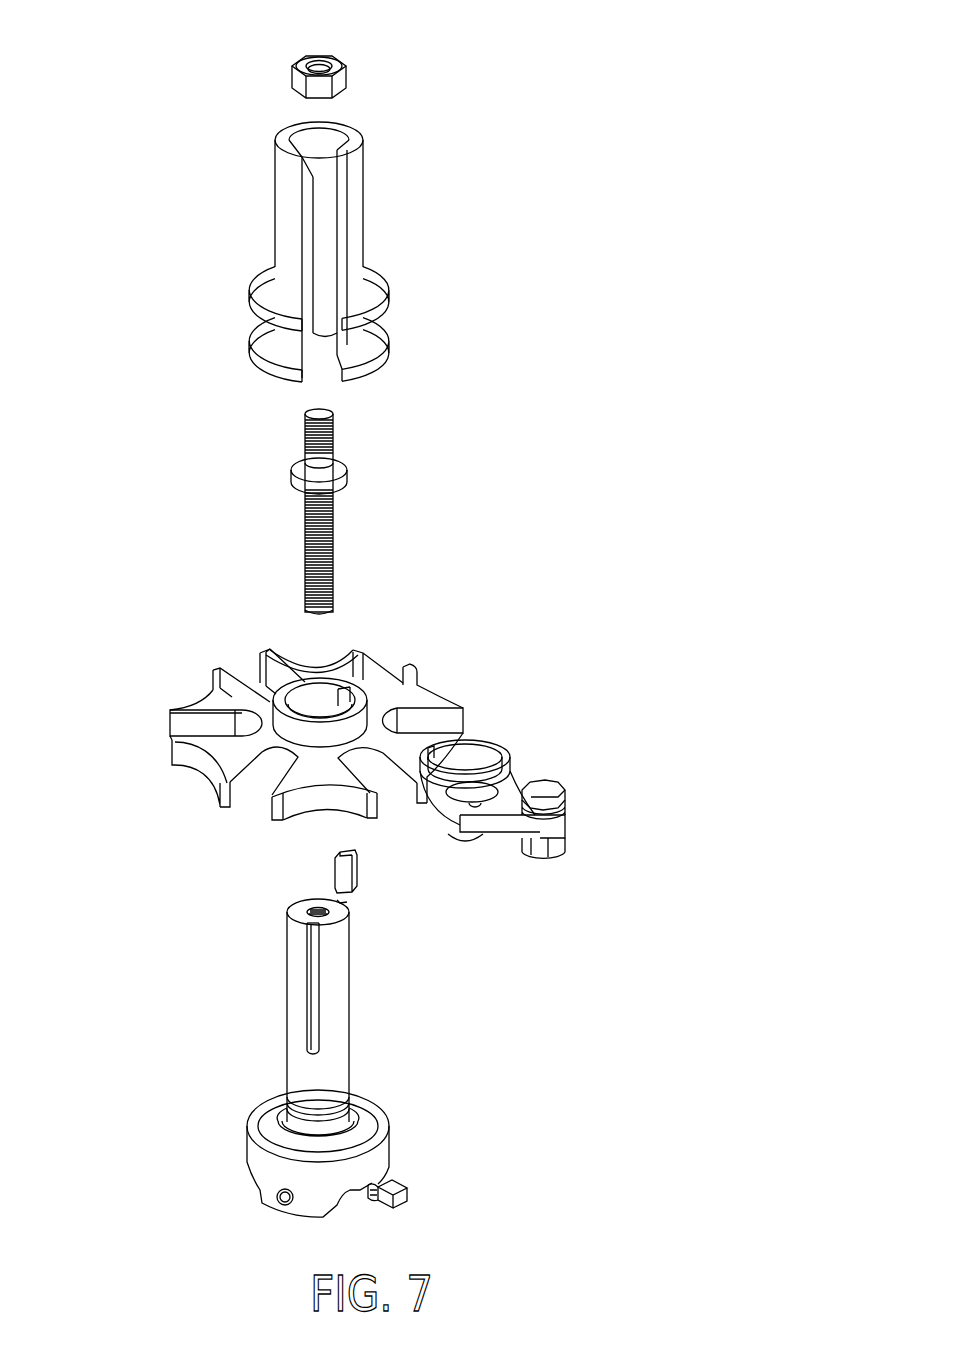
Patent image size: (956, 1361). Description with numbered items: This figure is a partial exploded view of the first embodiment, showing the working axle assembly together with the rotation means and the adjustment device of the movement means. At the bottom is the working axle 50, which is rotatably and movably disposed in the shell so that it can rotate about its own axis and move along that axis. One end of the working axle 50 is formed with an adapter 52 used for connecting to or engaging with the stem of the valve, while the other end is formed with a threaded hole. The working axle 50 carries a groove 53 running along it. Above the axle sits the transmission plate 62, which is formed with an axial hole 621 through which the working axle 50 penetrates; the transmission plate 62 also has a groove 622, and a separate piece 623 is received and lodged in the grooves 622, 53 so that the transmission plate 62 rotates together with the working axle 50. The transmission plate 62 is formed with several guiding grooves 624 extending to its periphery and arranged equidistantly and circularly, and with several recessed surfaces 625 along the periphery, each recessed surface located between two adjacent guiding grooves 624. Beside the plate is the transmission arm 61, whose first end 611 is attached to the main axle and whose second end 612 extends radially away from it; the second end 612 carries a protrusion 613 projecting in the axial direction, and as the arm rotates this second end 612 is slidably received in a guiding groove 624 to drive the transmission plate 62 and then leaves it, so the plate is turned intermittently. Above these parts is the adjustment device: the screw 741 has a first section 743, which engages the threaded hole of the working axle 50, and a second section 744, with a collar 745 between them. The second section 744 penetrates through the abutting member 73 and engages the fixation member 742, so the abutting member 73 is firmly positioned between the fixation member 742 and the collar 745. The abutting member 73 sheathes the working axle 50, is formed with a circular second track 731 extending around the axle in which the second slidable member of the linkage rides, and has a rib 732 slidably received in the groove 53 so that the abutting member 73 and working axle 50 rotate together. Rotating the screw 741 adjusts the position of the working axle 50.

The fixation member 742 is at (333, 78).
The abutting member 73 is at (383, 252).
The rib 732 is at (340, 249).
The second track 731 is at (373, 330).
The screw 741 is at (352, 504).
The second section 744 is at (310, 428).
The collar 745 is at (300, 473).
The first section 743 is at (304, 571).
The transmission plate 62 is at (290, 694).
The axial hole 621 is at (316, 696).
The groove 622 is at (365, 693).
The guiding grooves 624 is at (205, 722).
The recessed surfaces 625 is at (200, 762).
The transmission arm 61 is at (564, 803).
The first end 611 is at (467, 766).
The second end 612 is at (565, 822).
The protrusion 613 is at (544, 786).
The piece 623 is at (338, 871).
The working axle 50 is at (381, 1002).
The groove 53 is at (346, 916).
The adapter 52 is at (369, 1164).